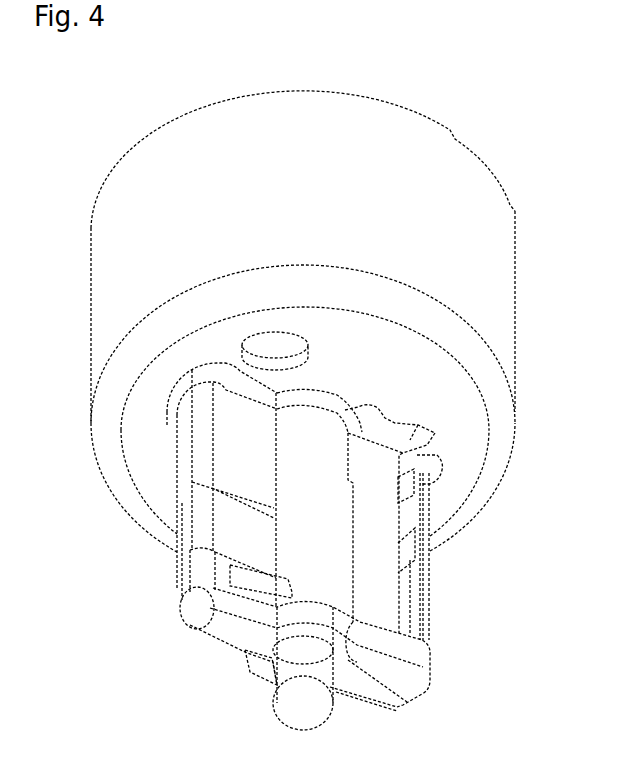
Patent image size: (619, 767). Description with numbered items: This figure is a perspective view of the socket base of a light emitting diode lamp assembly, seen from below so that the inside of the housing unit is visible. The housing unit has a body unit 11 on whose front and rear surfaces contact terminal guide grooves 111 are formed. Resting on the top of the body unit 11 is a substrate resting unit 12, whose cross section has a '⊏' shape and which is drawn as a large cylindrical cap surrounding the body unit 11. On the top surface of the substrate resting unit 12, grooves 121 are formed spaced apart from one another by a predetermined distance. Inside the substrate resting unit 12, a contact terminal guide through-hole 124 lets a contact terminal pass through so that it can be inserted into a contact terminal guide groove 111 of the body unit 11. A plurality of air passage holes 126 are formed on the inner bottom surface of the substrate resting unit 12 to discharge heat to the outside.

The body unit 11 is at (132, 600).
The substrate resting unit 12 is at (330, 321).
The grooves 121 is at (483, 170).
The contact terminal guide through-hole 124 is at (388, 440).
The air passage holes 126 is at (267, 343).
The contact terminal guide grooves 111 is at (380, 547).